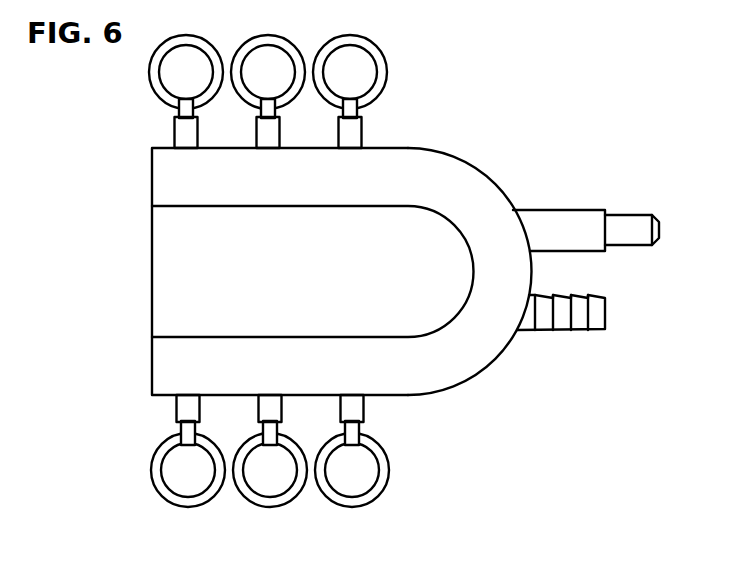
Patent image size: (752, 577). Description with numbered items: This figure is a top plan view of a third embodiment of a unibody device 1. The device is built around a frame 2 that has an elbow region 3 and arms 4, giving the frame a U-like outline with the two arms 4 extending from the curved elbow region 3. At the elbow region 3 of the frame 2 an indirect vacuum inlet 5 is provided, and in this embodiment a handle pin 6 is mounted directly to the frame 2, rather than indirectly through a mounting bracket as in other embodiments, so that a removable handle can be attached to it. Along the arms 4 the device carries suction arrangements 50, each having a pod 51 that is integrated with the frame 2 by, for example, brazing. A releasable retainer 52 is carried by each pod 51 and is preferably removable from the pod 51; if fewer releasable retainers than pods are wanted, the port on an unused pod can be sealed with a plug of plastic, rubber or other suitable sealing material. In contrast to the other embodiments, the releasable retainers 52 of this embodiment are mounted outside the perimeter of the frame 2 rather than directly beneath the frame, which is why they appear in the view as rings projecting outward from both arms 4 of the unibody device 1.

The unibody device 1 is at (518, 133).
The frame 2 is at (430, 148).
The elbow region 3 is at (500, 196).
The arms 4 is at (290, 207).
The indirect vacuum inlet 5 is at (605, 299).
The handle pin 6 is at (661, 224).
The suction arrangements 50 is at (138, 508).
The pods 51 is at (175, 132).
The releasable retainer 52 is at (208, 40).